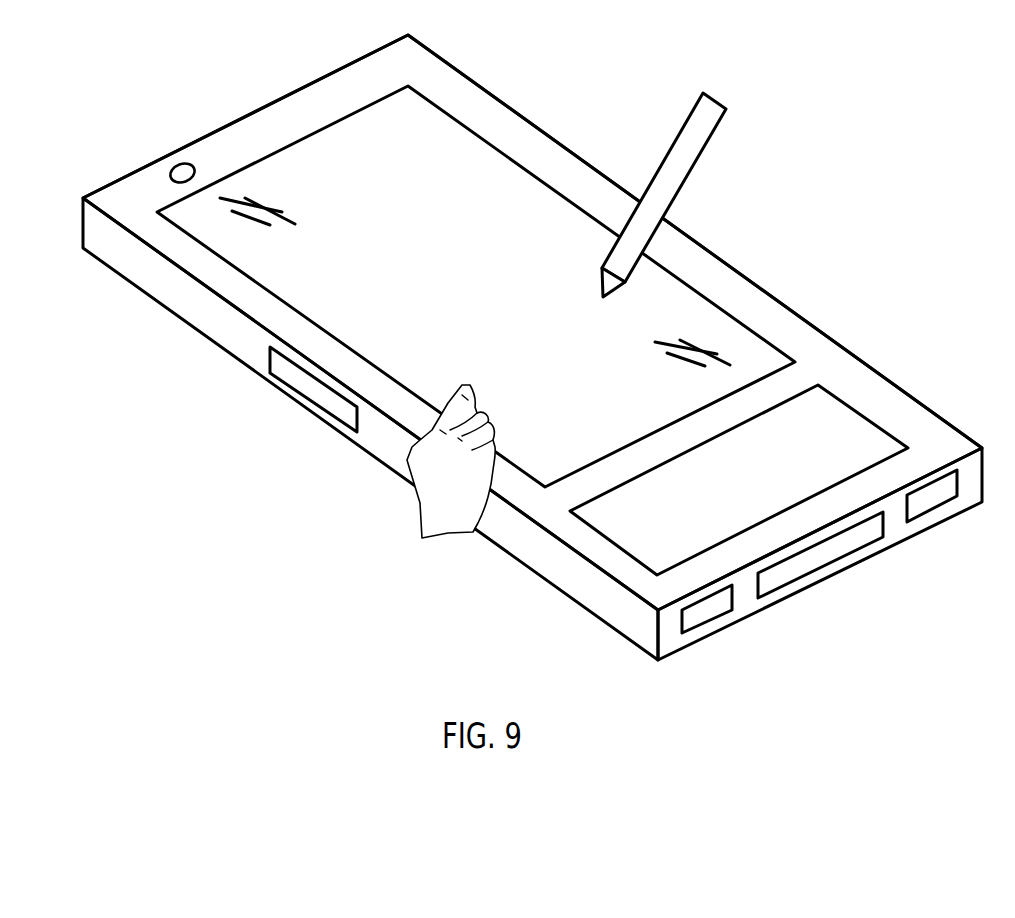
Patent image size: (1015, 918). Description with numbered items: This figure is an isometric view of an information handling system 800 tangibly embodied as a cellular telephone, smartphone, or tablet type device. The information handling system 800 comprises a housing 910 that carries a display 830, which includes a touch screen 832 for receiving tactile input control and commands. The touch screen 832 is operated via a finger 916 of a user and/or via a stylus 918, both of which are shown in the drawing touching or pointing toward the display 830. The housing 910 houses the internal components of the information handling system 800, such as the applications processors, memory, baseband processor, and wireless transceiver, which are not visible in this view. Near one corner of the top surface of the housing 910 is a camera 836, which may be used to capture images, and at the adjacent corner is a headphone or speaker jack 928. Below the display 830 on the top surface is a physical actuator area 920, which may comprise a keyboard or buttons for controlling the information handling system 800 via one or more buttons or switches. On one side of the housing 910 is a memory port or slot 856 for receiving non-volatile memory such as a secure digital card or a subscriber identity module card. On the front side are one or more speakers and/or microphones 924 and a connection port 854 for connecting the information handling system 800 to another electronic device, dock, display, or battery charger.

The information handling system 800 is at (548, 67).
The housing 910 is at (350, 68).
The headphone or speaker jack 928 is at (108, 185).
The display 830 is at (409, 151).
The touch screen 832 is at (520, 292).
The camera 836 is at (176, 163).
The stylus 918 is at (690, 117).
The finger 916 is at (468, 383).
The physical actuator area 920 is at (833, 412).
The memory slot 856 is at (276, 385).
The connection port 854 is at (837, 560).
The speakers and/or microphones 924 is at (937, 512).